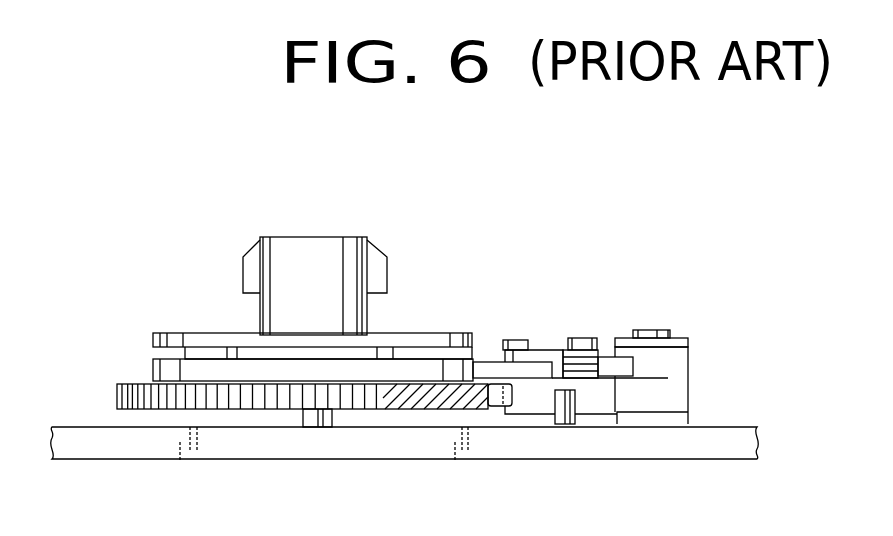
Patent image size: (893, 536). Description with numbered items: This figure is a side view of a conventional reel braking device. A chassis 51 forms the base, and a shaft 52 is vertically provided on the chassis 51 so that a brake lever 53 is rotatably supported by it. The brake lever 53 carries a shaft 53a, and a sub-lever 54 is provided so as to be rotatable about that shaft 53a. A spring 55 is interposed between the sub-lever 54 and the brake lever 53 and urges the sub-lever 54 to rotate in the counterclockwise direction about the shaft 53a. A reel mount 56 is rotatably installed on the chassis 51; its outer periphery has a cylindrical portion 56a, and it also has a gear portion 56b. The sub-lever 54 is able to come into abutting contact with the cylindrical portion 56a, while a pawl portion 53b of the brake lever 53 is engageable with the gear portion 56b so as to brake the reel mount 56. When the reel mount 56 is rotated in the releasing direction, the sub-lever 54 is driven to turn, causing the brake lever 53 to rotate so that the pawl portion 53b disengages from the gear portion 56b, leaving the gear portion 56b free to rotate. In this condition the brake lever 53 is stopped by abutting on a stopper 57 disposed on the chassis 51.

The chassis 51 is at (232, 450).
The shaft 52 is at (653, 332).
The brake lever 53 is at (643, 400).
The shaft 53a is at (540, 350).
The pawl portion 53b is at (522, 402).
The sub-lever 54 is at (491, 370).
The spring 55 is at (558, 348).
The reel mount 56 is at (293, 255).
The cylindrical portion 56a is at (155, 372).
The gear portion 56b is at (117, 400).
The stopper 57 is at (562, 395).